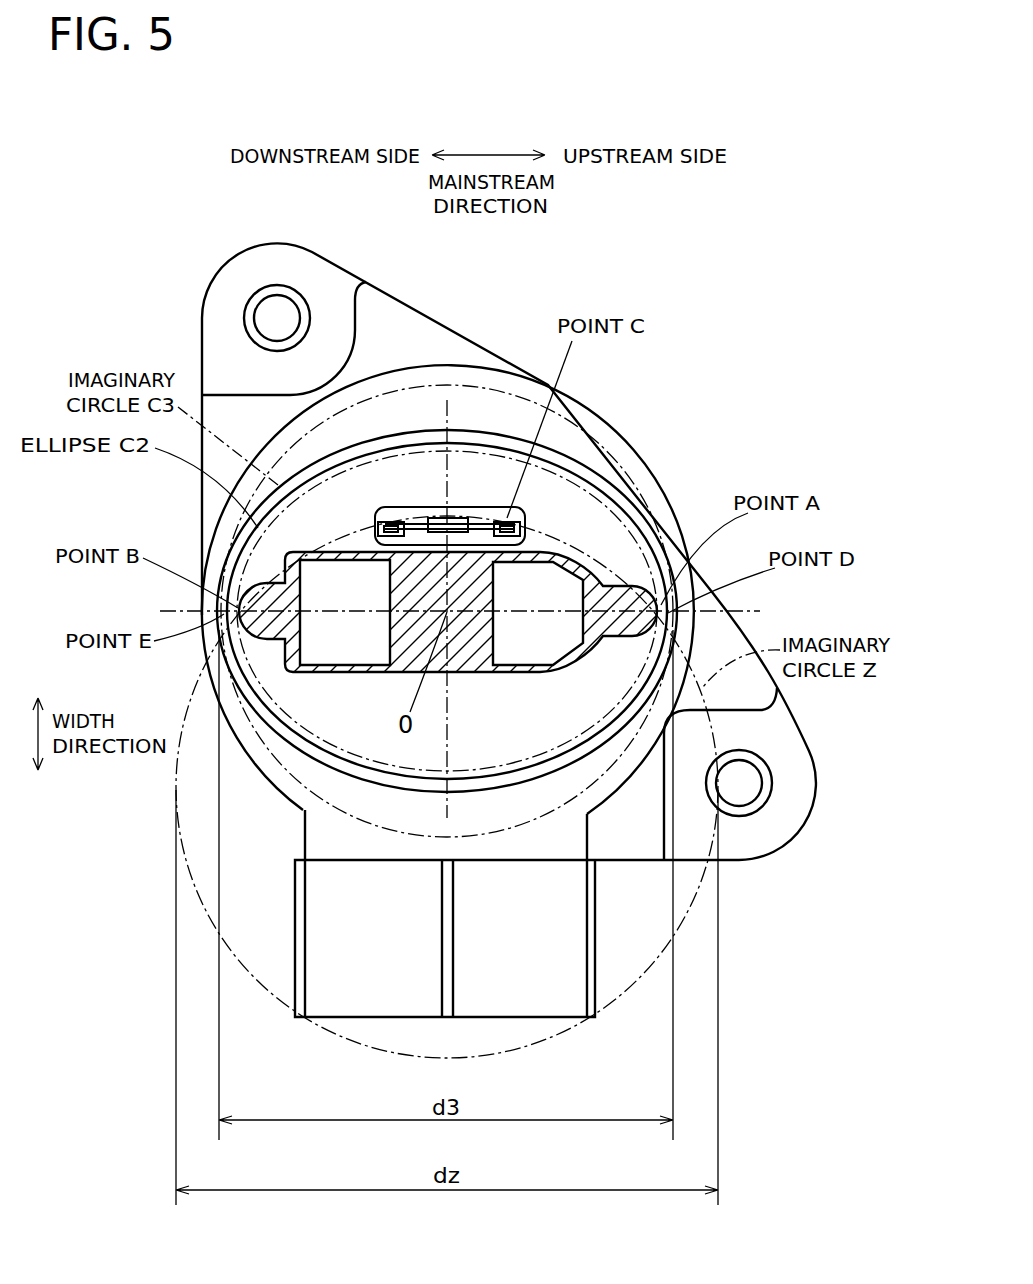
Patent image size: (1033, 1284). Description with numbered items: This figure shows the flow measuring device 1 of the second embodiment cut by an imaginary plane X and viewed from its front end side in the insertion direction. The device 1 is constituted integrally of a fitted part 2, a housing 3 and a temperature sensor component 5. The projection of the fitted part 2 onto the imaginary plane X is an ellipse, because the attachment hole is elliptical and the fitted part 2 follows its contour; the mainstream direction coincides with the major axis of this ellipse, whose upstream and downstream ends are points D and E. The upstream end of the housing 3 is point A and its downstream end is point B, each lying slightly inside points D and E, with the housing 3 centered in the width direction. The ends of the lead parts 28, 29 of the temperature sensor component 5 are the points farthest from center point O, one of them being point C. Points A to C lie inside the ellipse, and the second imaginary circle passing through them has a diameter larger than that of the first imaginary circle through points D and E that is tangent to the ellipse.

The flow measuring device 1 is at (759, 252).
The fitted part 2 is at (580, 477).
The housing 3 is at (553, 562).
The temperature sensor component 5 is at (454, 506).
The lead part 28 is at (502, 520).
The lead part 29 is at (401, 520).